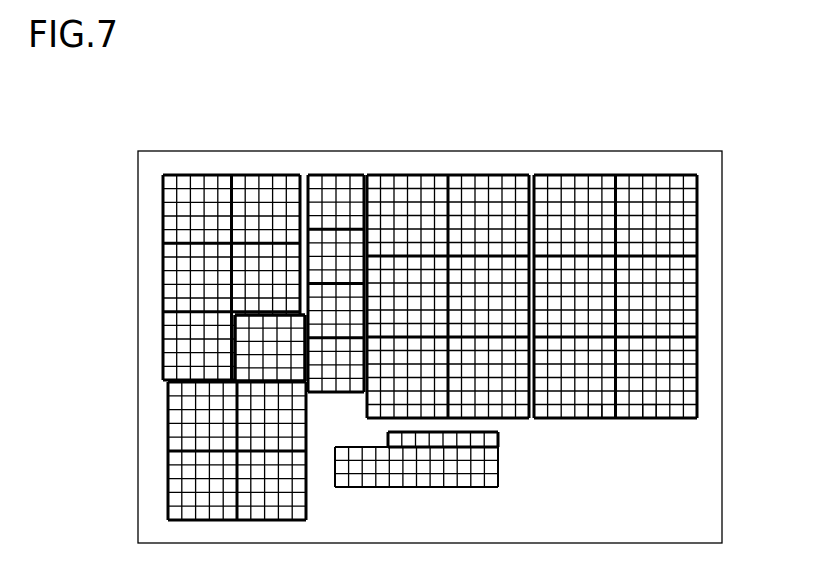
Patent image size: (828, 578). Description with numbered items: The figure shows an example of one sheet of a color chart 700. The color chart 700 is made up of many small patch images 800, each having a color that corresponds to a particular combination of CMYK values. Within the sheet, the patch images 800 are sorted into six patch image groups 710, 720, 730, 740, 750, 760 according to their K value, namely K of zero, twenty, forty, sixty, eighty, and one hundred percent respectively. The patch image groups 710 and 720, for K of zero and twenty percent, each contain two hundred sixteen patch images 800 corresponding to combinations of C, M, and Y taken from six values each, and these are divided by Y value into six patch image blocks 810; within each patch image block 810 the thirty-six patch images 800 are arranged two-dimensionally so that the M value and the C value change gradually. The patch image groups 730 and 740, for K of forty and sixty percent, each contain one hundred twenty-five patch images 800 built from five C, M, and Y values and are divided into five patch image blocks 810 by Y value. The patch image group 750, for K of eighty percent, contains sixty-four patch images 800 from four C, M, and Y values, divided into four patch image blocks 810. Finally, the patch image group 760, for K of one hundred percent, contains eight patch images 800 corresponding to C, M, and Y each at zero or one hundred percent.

The color chart 700 is at (174, 120).
The patch image group 710 is at (496, 175).
The patch image group 720 is at (667, 175).
The patch image group 730 is at (163, 218).
The patch image group 740 is at (168, 466).
The patch image group 750 is at (355, 175).
The patch image group 760 is at (499, 444).
The patch image 800 is at (295, 512).
The patch image block 810 is at (656, 423).